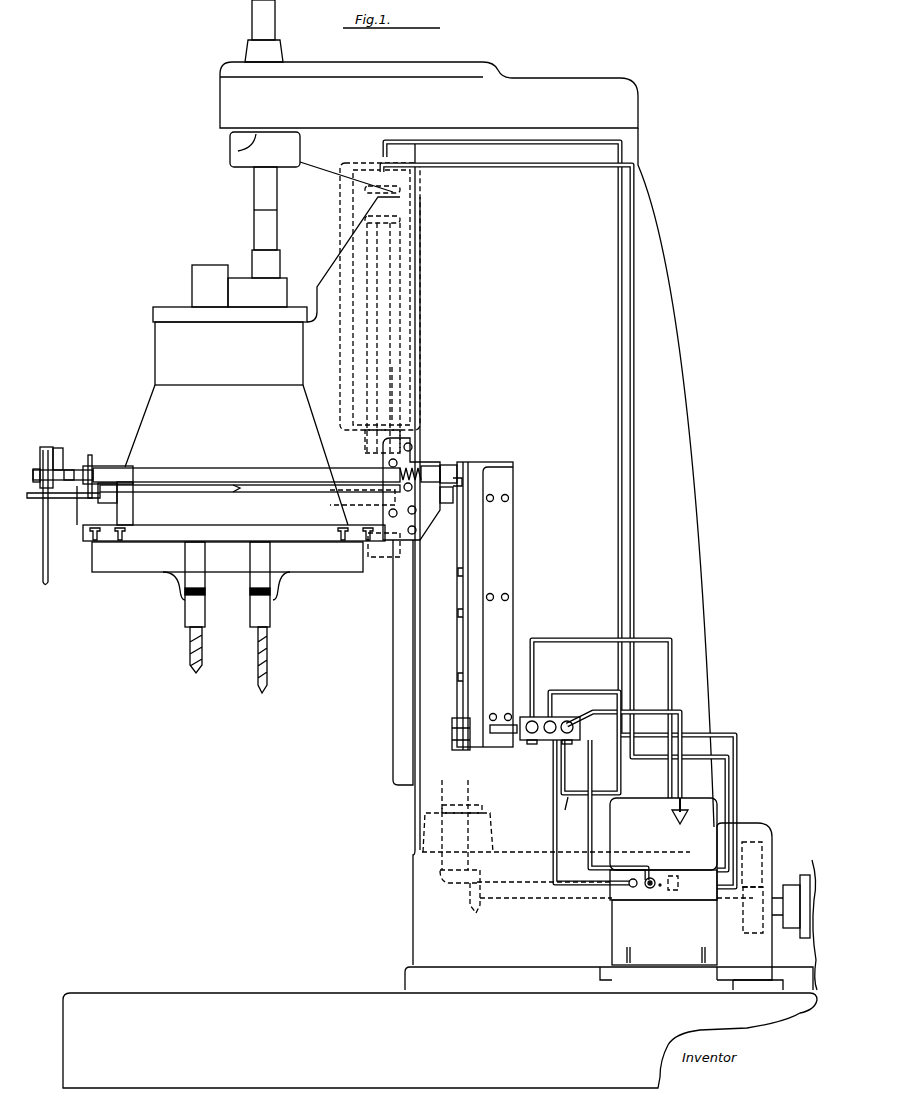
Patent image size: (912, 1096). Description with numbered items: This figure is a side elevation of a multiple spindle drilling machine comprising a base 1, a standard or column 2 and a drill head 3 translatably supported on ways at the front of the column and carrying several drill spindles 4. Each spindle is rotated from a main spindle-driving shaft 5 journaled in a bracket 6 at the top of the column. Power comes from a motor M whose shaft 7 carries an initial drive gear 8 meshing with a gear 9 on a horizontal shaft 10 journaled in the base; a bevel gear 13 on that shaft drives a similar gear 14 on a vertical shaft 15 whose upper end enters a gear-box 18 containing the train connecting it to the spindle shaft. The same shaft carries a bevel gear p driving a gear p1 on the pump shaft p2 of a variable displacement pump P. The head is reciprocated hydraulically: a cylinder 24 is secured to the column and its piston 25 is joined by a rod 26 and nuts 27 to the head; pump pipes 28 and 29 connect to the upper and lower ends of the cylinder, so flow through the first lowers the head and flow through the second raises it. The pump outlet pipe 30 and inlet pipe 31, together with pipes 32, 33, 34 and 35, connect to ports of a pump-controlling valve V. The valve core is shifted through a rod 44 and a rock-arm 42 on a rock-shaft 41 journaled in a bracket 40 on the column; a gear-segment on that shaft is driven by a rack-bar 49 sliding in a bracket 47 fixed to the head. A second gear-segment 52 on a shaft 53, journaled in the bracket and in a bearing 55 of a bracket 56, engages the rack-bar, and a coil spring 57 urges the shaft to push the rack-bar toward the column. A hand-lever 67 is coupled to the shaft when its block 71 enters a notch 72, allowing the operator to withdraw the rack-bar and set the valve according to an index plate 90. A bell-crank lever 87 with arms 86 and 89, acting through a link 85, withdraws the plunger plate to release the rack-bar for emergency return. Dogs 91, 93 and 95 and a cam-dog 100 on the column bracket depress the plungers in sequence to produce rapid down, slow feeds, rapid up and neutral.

The base 1 is at (440, 1040).
The standard or column 2 is at (609, 559).
The drill head 3 is at (262, 361).
The drill spindles 4 is at (250, 575).
The main spindle-driving shaft 5 is at (254, 195).
The bracket 6 is at (232, 150).
The motor shaft 7 is at (777, 920).
The initial drive gear 8 is at (753, 933).
The gear 9 is at (760, 842).
The horizontally disposed shaft 10 is at (547, 898).
The bevel gear 13 is at (478, 914).
The bevel gear 14 is at (452, 886).
The vertical shaft 15 is at (468, 820).
The gear-box 18 is at (429, 64).
The cylinder 24 is at (365, 228).
The piston 25 is at (368, 195).
The piston rod 26 is at (400, 367).
The nuts 27 is at (336, 505).
The outlet pipe 28 is at (384, 148).
The outlet pipe 29 is at (504, 167).
The outlet pipe 30 is at (552, 828).
The inlet pipe 31 is at (588, 828).
The pipe 32 is at (681, 712).
The pipe 33 is at (590, 694).
The pipe 34 is at (568, 807).
The pipe 35 is at (586, 640).
The bracket 40 is at (513, 530).
The rock-shaft 41 is at (463, 655).
The rock-arm 42 is at (455, 745).
The rod 44 is at (500, 735).
The bracket 47 is at (420, 530).
The rack-bar 49 is at (447, 504).
The gear-segment 52 is at (450, 466).
The shaft 53 is at (292, 470).
The bearing 55 is at (133, 470).
The bracket 56 is at (133, 513).
The coil spring 57 is at (414, 466).
The hand-lever 67 is at (48, 515).
The block 71 is at (46, 447).
The notch 72 is at (58, 448).
The link 85 is at (256, 492).
The arm 86 is at (100, 500).
The bell-crank lever 87 is at (85, 470).
The hand-lever arm 89 is at (77, 520).
The index plate 90 is at (90, 455).
The dog 91 is at (458, 572).
The dog 93 is at (458, 614).
The dog 95 is at (458, 678).
The cam-dog 100 is at (462, 482).
The pump-controlling valve V is at (535, 717).
The variable displacement pump P is at (663, 881).
The motor M is at (810, 868).
The bevel gear p is at (673, 893).
The bevel gear p1 is at (665, 900).
The pump shaft p2 is at (645, 890).